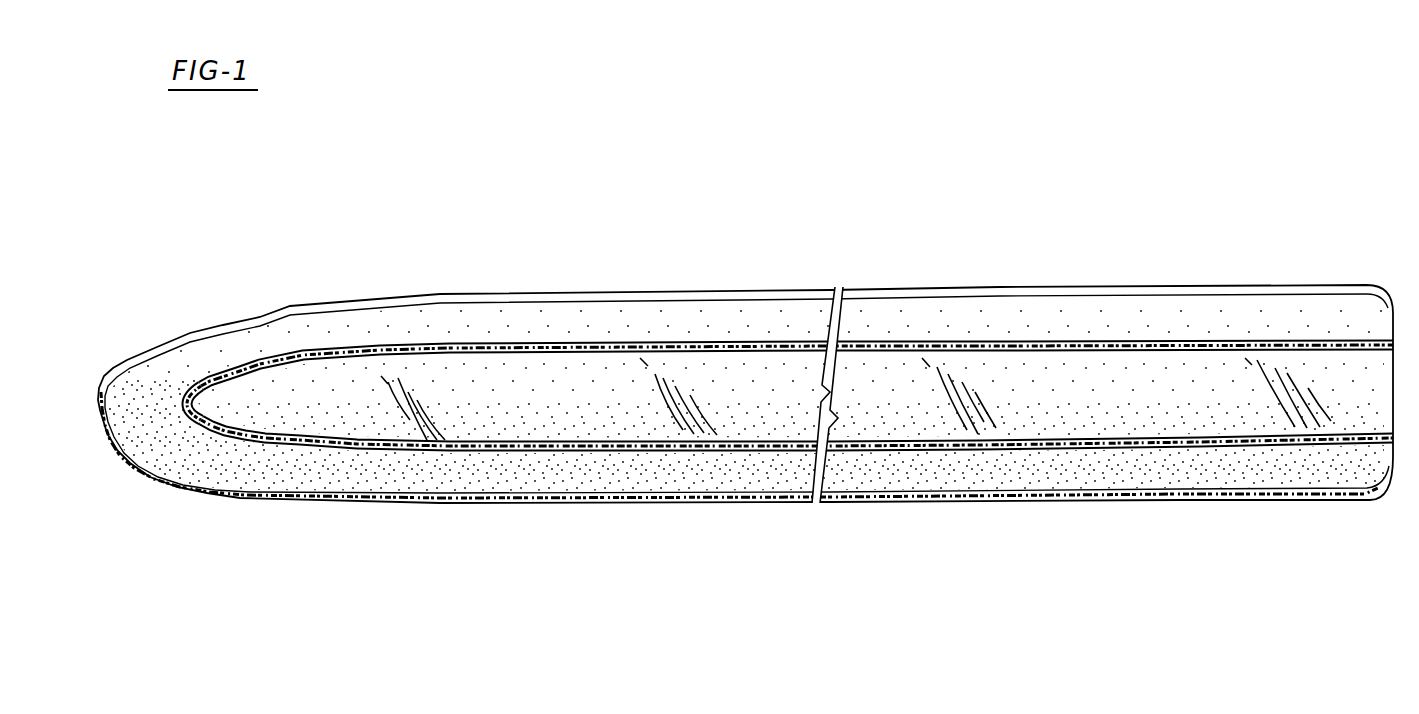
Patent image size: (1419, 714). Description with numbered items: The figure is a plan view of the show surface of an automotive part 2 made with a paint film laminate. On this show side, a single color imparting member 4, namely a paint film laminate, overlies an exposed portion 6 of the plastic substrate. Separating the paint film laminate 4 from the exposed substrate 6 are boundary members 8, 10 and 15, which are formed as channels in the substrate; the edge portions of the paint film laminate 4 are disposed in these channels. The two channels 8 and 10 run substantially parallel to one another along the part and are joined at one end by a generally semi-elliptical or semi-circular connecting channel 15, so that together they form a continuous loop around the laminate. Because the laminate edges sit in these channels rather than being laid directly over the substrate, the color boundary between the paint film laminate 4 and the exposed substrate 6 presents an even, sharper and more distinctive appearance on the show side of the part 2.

The automotive part 2 is at (518, 508).
The color imparting member 4 is at (313, 413).
The exposed portion of the substrate 6 is at (321, 347).
The boundary member 8 is at (530, 343).
The boundary member 10 is at (388, 449).
The connecting channel 15 is at (184, 397).